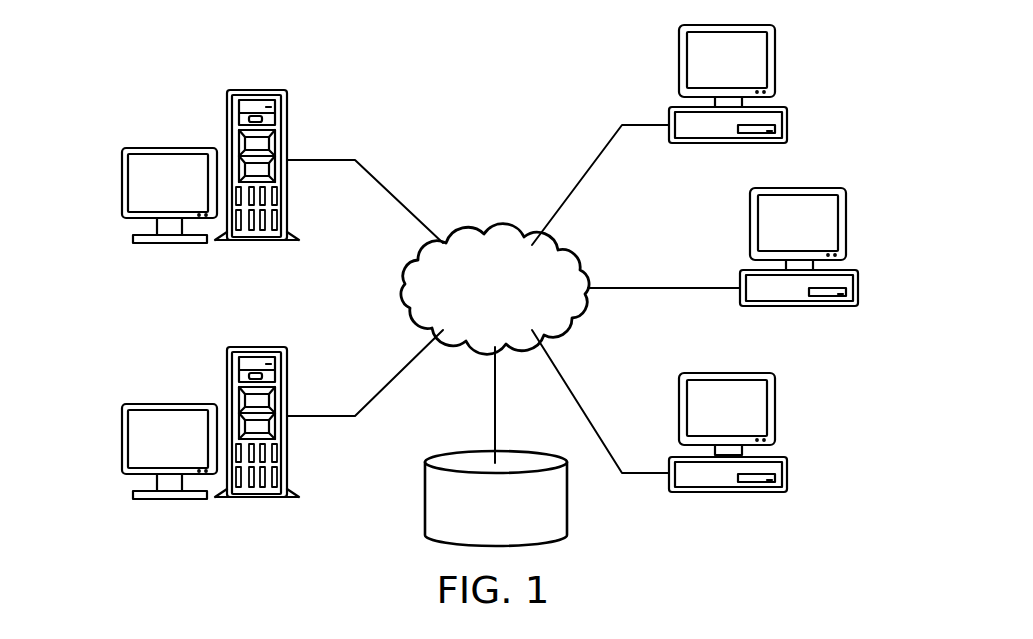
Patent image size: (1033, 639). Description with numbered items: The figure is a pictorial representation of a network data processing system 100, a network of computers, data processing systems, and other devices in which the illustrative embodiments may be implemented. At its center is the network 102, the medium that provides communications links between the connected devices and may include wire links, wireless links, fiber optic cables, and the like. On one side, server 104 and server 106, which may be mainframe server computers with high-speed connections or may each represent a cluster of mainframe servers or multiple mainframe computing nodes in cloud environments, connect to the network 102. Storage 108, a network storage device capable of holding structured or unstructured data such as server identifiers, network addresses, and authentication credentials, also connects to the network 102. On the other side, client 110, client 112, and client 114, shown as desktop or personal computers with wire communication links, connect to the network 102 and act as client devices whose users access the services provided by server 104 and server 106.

The network data processing system 100 is at (359, 67).
The network 102 is at (470, 235).
The server 104 is at (122, 185).
The server 106 is at (122, 437).
The storage 108 is at (425, 498).
The client 110 is at (788, 117).
The client 112 is at (857, 295).
The client 114 is at (787, 482).